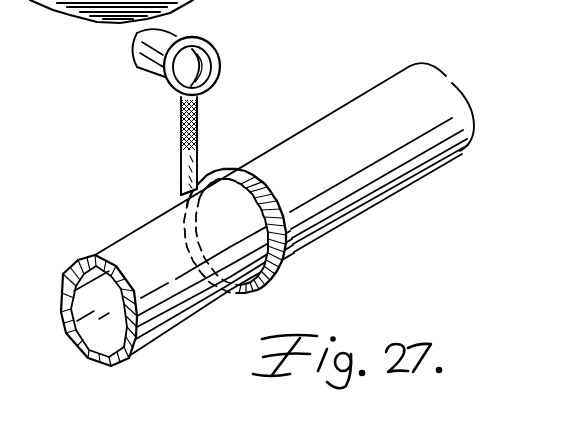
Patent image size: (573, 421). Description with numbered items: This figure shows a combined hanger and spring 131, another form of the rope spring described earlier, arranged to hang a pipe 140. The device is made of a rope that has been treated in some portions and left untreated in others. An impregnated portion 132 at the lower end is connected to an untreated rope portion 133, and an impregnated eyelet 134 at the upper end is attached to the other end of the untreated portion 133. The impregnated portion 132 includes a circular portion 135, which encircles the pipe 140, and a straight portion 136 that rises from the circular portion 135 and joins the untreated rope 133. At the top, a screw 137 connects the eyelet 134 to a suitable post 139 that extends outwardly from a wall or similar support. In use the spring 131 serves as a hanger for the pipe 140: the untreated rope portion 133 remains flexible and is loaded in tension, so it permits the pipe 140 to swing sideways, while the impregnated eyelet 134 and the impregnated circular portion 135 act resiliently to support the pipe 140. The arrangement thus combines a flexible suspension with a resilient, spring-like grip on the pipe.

The combined hanger and spring 131 is at (167, 110).
The impregnated portion 132 is at (148, 197).
The untreated rope portion 133 is at (198, 132).
The impregnated eyelet 134 is at (207, 40).
The circular portion 135 is at (273, 193).
The straight portion 136 is at (180, 160).
The screw 137 is at (219, 62).
The post 139 is at (136, 65).
The pipe 140 is at (267, 203).